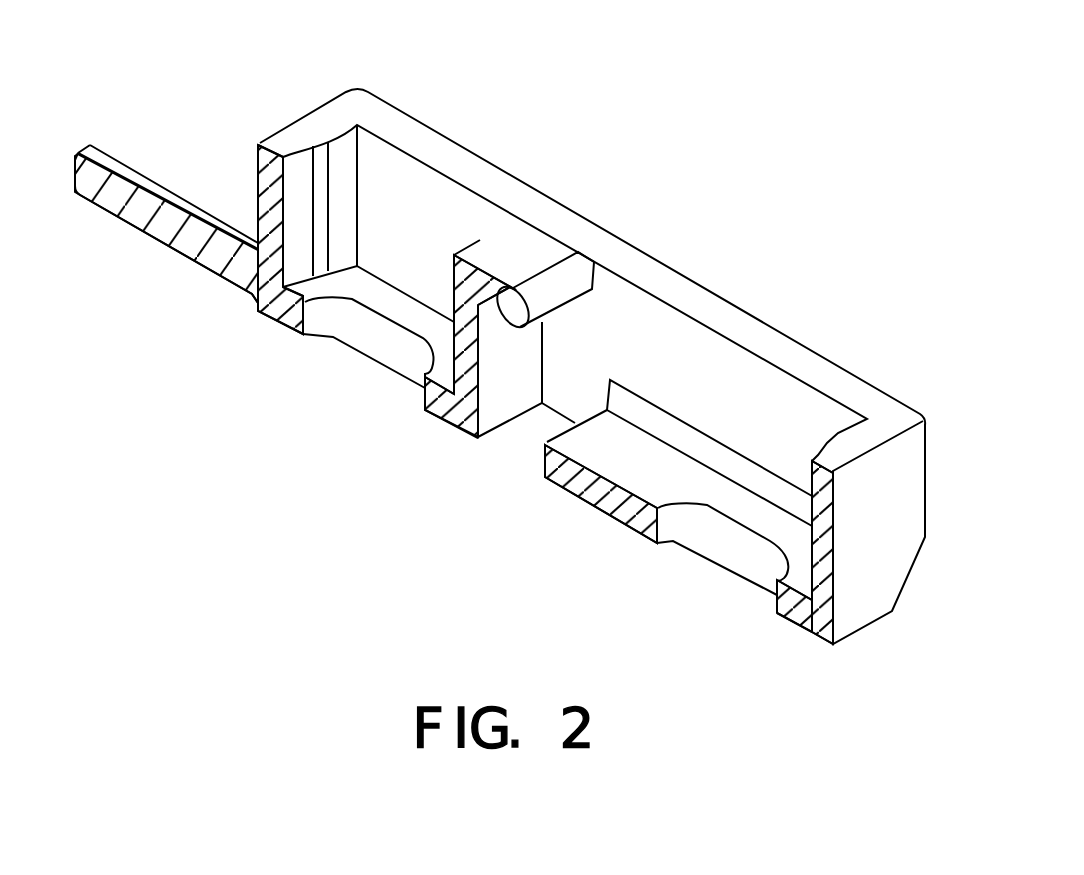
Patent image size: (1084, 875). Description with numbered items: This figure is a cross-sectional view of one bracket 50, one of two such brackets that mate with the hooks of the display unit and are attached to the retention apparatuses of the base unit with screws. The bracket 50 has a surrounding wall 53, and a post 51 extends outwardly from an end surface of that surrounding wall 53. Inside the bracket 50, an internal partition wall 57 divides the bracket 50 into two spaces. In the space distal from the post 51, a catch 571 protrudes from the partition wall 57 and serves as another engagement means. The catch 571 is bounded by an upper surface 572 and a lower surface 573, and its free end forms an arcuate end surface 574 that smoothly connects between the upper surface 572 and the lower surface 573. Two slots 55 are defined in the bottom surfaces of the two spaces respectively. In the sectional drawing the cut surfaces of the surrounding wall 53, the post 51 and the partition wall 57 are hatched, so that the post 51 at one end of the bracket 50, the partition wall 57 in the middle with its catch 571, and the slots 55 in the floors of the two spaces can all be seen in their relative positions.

The bracket 50 is at (866, 352).
The post 51 is at (128, 167).
The surrounding wall 53 is at (258, 193).
The slot 55 is at (334, 321).
The internal partition wall 57 is at (502, 377).
The catch 571 is at (504, 314).
The upper surface 572 is at (527, 250).
The lower surface 573 is at (478, 388).
The arcuate end surface 574 is at (565, 284).